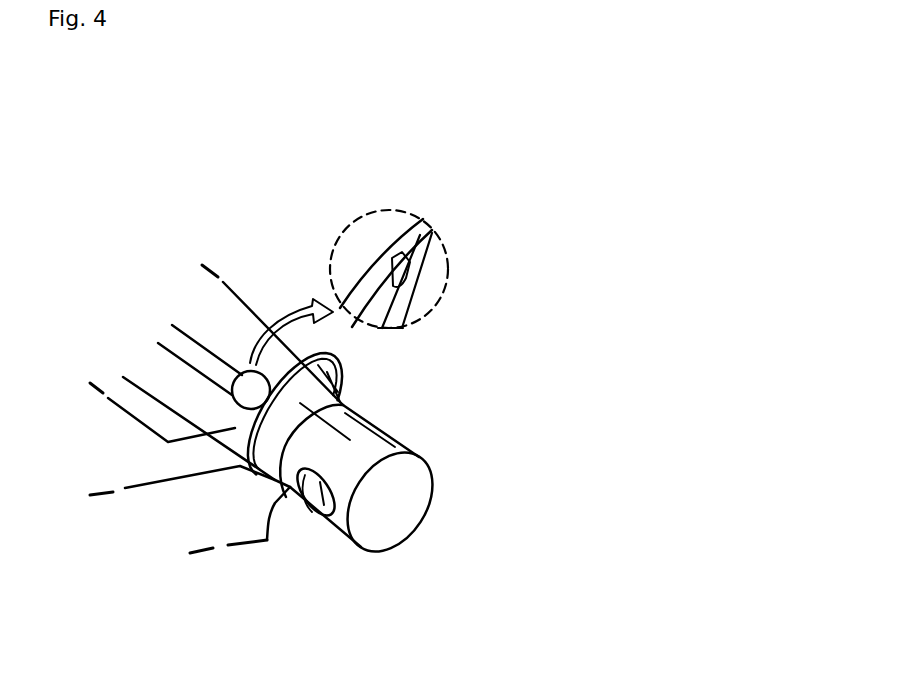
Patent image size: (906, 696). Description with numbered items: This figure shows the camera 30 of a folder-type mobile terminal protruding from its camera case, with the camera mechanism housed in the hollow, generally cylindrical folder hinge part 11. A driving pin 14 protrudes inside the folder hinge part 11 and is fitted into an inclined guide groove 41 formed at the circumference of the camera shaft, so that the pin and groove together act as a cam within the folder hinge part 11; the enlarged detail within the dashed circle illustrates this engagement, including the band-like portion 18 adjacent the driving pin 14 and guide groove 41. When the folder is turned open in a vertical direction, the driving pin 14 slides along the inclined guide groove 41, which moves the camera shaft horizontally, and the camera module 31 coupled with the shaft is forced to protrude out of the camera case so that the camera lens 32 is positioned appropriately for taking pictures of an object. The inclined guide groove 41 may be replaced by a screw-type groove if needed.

The folder hinge part 11 is at (235, 312).
The driving pin 14 is at (408, 268).
The fixing band 18 is at (422, 224).
The camera 30 is at (455, 493).
The camera module 31 is at (390, 437).
The camera lens 32 is at (317, 517).
The inclined guide groove 41 is at (395, 317).